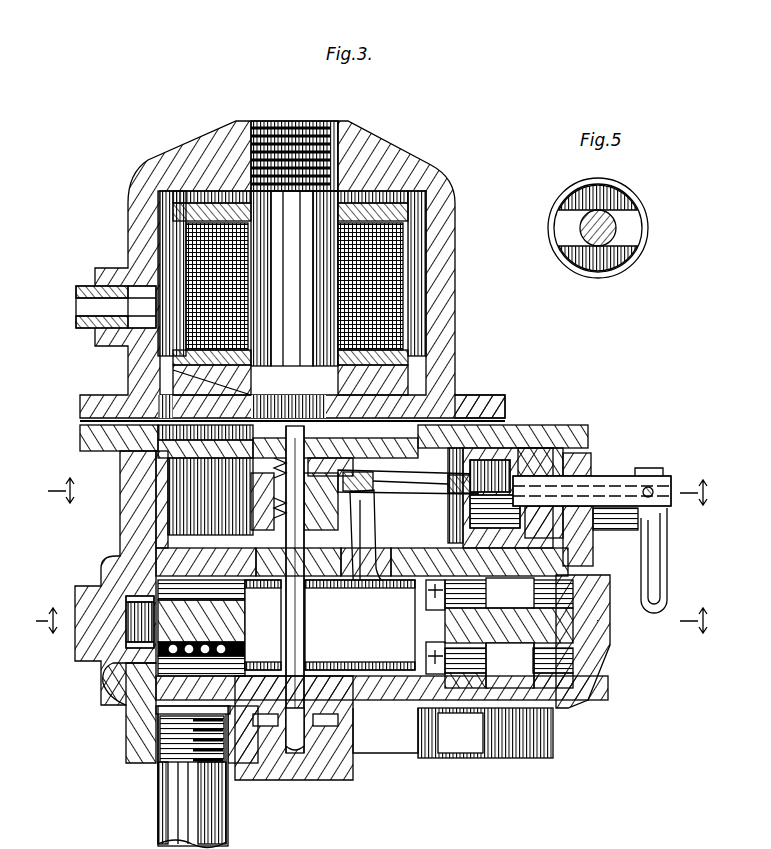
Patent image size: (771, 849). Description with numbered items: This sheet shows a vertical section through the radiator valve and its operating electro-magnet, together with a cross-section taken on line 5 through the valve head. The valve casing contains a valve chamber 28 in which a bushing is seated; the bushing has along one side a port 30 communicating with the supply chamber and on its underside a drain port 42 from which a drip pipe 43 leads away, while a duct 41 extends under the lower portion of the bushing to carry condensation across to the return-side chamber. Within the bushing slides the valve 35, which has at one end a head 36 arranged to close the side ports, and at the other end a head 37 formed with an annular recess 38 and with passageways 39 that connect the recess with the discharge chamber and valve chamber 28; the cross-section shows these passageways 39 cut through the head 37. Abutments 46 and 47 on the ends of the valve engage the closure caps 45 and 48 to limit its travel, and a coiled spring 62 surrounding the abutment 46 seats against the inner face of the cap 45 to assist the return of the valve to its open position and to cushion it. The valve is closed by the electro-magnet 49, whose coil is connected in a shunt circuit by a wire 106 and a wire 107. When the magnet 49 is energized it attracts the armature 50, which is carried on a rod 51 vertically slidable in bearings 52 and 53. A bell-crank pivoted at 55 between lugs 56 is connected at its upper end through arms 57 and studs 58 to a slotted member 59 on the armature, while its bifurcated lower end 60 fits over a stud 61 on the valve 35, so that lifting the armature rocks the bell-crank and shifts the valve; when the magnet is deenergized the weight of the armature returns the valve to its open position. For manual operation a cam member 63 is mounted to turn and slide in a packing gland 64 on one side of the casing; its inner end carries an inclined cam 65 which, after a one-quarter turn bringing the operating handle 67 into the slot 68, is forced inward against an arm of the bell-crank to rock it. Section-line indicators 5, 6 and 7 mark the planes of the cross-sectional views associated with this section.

In FIG. 3, the wire 106 is at (70, 292).
In FIG. 3, the wire 107 is at (70, 304).
In FIG. 3, the coiled spring 62 is at (128, 388).
In FIG. 3, the electro-magnet 49 is at (400, 300).
In FIG. 3, the armature 50 is at (350, 400).
In FIG. 3, the pivot 55 is at (290, 380).
In FIG. 3, the bifurcated lower end 60 is at (430, 402).
In FIG. 3, the lugs 56 is at (497, 420).
In FIG. 3, the packing gland 64 is at (560, 460).
In FIG. 3, the cam member 63 is at (570, 482).
In FIG. 3, the slot 68 is at (625, 462).
In FIG. 3, the section line 6 is at (382, 491).
In FIG. 3, the studs 58 is at (250, 462).
In FIG. 3, the slotted member 59 is at (245, 497).
In FIG. 3, the arms 57 is at (330, 480).
In FIG. 3, the bearing 52 is at (370, 505).
In FIG. 3, the cam 65 is at (500, 498).
In FIG. 3, the operating handle 67 is at (660, 575).
In FIG. 3, the section line 7 is at (375, 620).
In FIG. 3, the valve head 36 is at (263, 625).
In FIG. 3, the stud 61 is at (352, 620).
In FIG. 3, the rod 51 is at (278, 600).
In FIG. 3, the port 30 is at (259, 647).
In FIG. 3, the bearing 53 is at (340, 628).
In FIG. 3, the passageways 39 is at (470, 625).
In FIG. 5, the passageways 39 is at (612, 192).
In FIG. 3, the section line 5— 5 is at (480, 648).
In FIG. 3, the end cap 45 is at (70, 630).
In FIG. 3, the drip pipe 43 is at (168, 815).
In FIG. 3, the abutment 46 is at (130, 662).
In FIG. 3, the drain port 42 is at (220, 770).
In FIG. 3, the duct 41 is at (285, 720).
In FIG. 3, the valve 35 is at (385, 732).
In FIG. 3, the annular recess 38 is at (485, 733).
In FIG. 3, the closure cap 48 is at (590, 650).
In FIG. 3, the abutment 47 is at (515, 655).
In FIG. 5, the abutment 47 is at (604, 218).
In FIG. 3, the valve chamber 28 is at (590, 696).
In FIG. 5, the valve head 37 is at (638, 232).